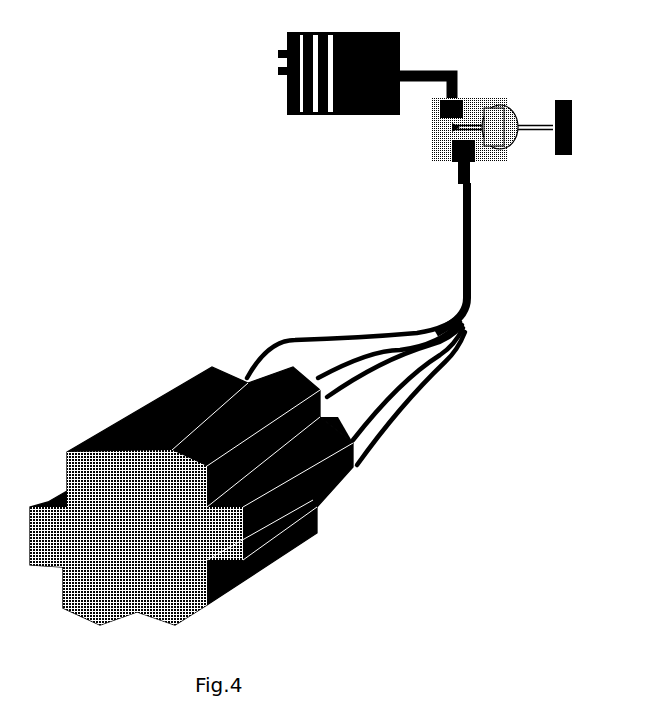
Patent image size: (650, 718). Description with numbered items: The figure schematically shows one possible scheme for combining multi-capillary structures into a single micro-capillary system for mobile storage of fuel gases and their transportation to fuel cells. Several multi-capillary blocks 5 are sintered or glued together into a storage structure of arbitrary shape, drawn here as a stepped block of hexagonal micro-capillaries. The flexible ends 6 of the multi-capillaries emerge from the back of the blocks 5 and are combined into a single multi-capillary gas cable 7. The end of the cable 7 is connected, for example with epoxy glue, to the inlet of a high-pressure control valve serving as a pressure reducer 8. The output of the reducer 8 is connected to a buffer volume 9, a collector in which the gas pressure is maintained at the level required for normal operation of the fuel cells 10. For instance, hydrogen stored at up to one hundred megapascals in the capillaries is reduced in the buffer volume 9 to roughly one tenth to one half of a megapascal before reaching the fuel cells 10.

The multi-capillary blocks 5 is at (173, 420).
The parts of the gas pipeline 6 is at (287, 340).
The gas pipeline 7 is at (462, 242).
The pressure reducer 8 is at (484, 153).
The buffer volume for hydrogen at reduced pressure 9 is at (355, 99).
The fuel cells 10 is at (302, 70).